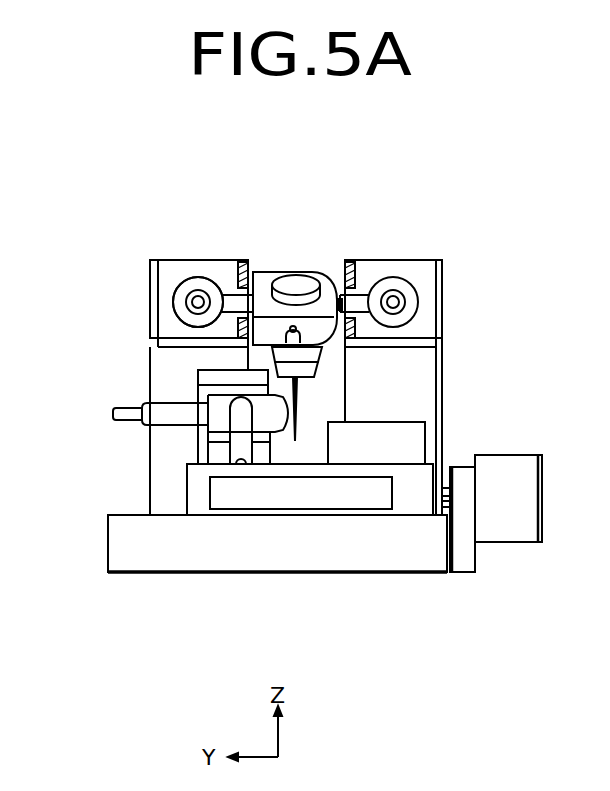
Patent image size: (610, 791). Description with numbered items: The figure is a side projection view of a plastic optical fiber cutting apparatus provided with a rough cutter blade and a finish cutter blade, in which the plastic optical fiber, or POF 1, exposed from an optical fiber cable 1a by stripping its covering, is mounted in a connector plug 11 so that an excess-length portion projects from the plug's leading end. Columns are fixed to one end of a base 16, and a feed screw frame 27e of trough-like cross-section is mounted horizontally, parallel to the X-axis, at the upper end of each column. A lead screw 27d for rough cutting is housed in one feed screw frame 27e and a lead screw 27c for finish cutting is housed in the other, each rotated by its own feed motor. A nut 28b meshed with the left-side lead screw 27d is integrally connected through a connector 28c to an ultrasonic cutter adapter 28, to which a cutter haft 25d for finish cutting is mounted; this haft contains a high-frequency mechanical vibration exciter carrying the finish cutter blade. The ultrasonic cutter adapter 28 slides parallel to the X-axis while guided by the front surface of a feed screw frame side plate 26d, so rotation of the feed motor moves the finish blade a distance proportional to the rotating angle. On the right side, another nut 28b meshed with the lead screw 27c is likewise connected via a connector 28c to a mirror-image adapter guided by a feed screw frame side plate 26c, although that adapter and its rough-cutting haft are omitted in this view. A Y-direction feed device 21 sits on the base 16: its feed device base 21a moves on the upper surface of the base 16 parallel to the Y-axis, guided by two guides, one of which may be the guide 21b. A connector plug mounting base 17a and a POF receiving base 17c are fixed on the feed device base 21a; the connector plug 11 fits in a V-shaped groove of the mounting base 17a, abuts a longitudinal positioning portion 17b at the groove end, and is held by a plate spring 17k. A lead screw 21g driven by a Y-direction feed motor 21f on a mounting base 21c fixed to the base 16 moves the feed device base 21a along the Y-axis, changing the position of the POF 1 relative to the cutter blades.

The POF 1 is at (125, 404).
The optical fiber cable 1a is at (143, 420).
The connector plug 11 is at (218, 410).
The base 16 is at (396, 554).
The connector plug mounting base 17a is at (207, 452).
The longitudinal positioning portion 17b is at (207, 439).
The POF receiving base 17c is at (395, 422).
The plate spring 17k is at (245, 443).
The Y-direction feed device 21 is at (465, 397).
The feed device base 21a is at (189, 486).
The slide guide 21b is at (247, 496).
The mounting base 21c is at (470, 573).
The Y-direction feed motor 21f is at (512, 542).
The lead screw 21g is at (443, 489).
The cutter haft for finish cutting 25d is at (297, 280).
The feed screw frame side plate 26c is at (341, 299).
The feed screw frame side plate for finish cutting 26d is at (242, 261).
The lead screw for finish cutting 27c is at (397, 297).
The lead screw for rough cutting 27d is at (188, 299).
The feed screw frame 27e is at (442, 292).
The ultrasonic cutter adapter 28 is at (268, 272).
The nut 28b is at (178, 288).
The connector 28c is at (228, 295).